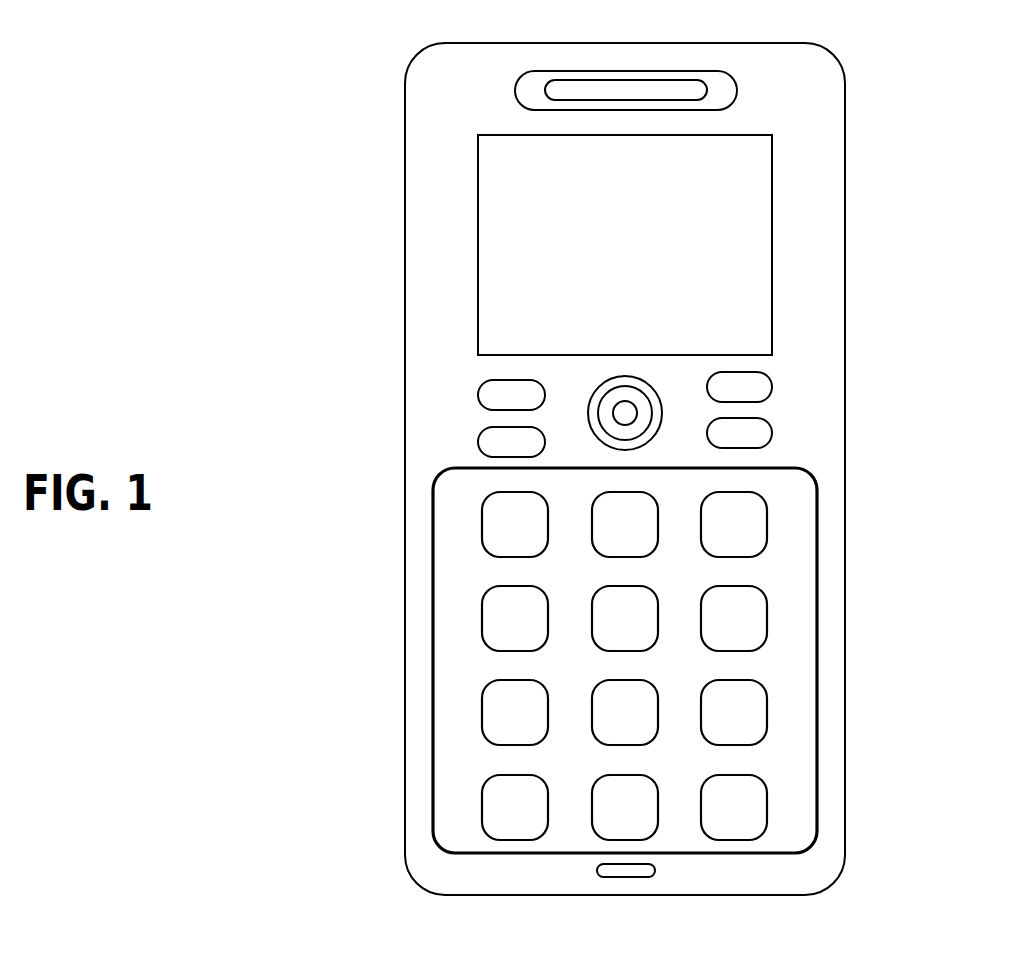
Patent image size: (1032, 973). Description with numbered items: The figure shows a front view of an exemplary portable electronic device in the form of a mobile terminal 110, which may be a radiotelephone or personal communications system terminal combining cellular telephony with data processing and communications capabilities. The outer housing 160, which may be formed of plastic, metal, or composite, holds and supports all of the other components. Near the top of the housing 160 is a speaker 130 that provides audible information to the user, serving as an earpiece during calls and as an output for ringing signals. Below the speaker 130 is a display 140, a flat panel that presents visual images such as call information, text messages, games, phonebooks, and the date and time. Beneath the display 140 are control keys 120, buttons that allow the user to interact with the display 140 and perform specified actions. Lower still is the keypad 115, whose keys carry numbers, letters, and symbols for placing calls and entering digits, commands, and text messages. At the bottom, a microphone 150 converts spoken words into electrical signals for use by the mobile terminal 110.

The mobile terminal 110 is at (264, 119).
The keypad 115 is at (572, 660).
The control keys 120 is at (865, 362).
The speaker 130 is at (626, 56).
The display 140 is at (591, 244).
The microphone 150 is at (608, 900).
The housing 160 is at (664, 469).